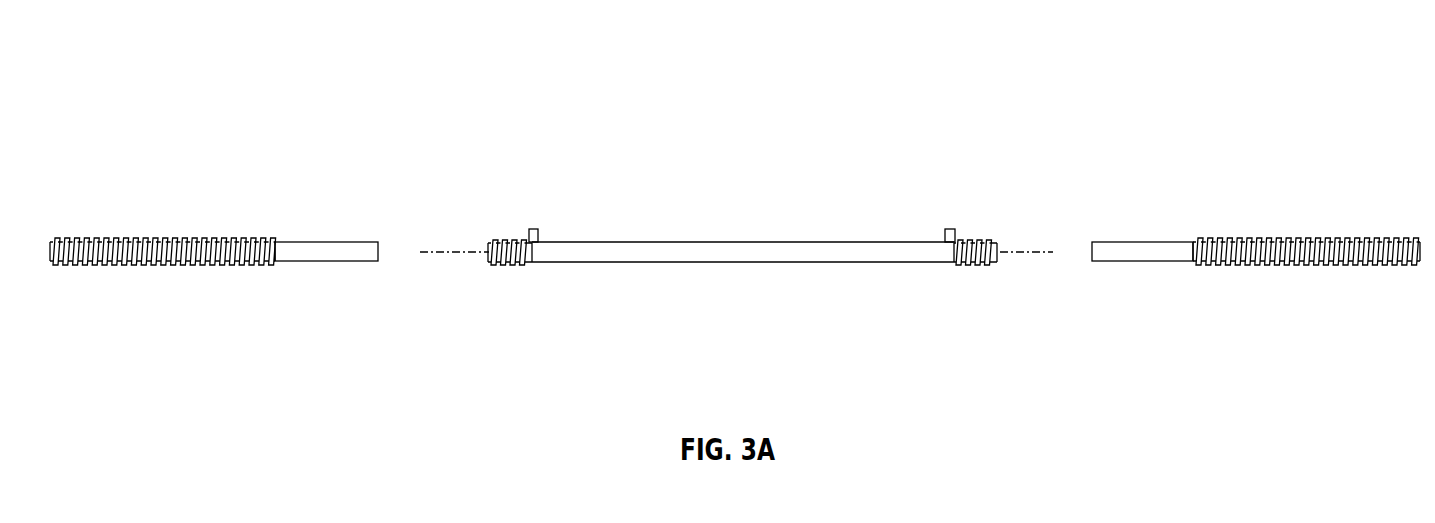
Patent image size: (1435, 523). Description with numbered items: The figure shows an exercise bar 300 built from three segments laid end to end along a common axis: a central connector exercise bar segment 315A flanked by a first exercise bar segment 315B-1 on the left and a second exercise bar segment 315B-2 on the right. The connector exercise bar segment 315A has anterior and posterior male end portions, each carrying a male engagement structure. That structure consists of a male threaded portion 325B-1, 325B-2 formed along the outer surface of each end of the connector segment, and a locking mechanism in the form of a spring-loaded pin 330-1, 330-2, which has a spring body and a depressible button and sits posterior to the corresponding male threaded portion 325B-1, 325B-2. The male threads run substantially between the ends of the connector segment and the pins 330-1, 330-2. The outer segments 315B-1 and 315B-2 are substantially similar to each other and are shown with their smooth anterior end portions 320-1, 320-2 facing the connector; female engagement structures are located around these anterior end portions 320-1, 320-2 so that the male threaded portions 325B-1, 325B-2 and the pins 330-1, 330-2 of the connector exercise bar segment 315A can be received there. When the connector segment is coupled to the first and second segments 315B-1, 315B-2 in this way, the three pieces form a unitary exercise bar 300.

The exercise bar 300 is at (255, 75).
The connector exercise bar segment 315A is at (740, 242).
The first exercise bar segment 315B-1 is at (313, 258).
The second exercise bar segment 315B-2 is at (1125, 258).
The anterior end portion 320-1 is at (380, 252).
The anterior end portion 320-2 is at (1090, 252).
The male threaded portion 325B-1 is at (508, 262).
The male threaded portion 325B-2 is at (975, 262).
The spring-loaded pin 330-1 is at (536, 228).
The spring-loaded pin 330-2 is at (951, 229).